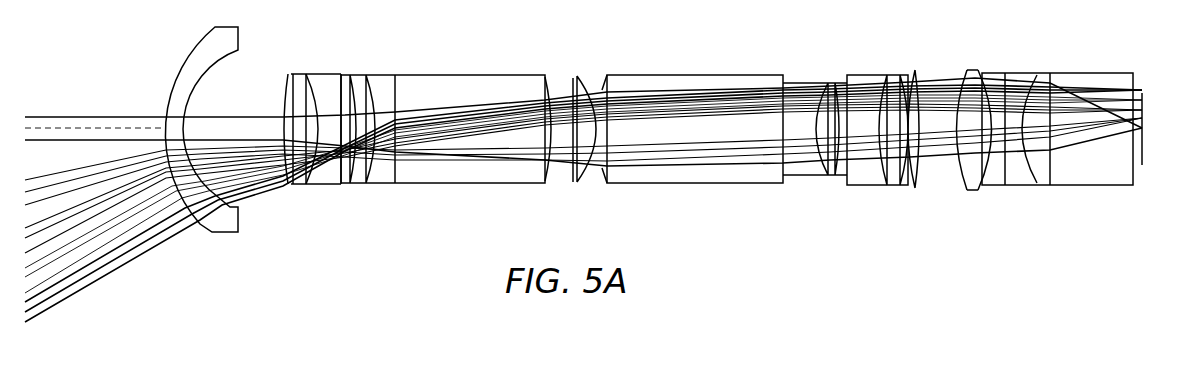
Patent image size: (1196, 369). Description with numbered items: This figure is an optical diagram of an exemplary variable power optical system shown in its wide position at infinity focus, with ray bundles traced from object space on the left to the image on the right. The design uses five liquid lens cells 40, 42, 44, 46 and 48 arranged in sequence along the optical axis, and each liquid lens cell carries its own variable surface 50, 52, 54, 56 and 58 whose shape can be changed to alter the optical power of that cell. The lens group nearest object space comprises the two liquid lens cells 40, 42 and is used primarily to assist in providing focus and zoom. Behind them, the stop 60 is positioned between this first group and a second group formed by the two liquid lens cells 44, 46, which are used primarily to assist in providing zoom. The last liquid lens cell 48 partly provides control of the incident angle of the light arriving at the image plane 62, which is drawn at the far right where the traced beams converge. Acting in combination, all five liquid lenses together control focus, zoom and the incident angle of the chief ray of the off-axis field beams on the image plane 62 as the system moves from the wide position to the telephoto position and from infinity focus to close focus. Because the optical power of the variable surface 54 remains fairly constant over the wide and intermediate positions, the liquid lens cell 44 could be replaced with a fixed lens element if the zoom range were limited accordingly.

The liquid lens cell 40 is at (342, 59).
The liquid lens cell 42 is at (543, 59).
The liquid lens cell 44 is at (843, 59).
The liquid lens cell 46 is at (907, 59).
The liquid lens cell 48 is at (1133, 59).
The variable surface 50 is at (310, 176).
The variable surface 52 is at (371, 172).
The variable surface 54 is at (817, 168).
The variable surface 56 is at (877, 170).
The variable surface 58 is at (1025, 170).
The stop 60 is at (570, 70).
The image plane 62 is at (1145, 138).